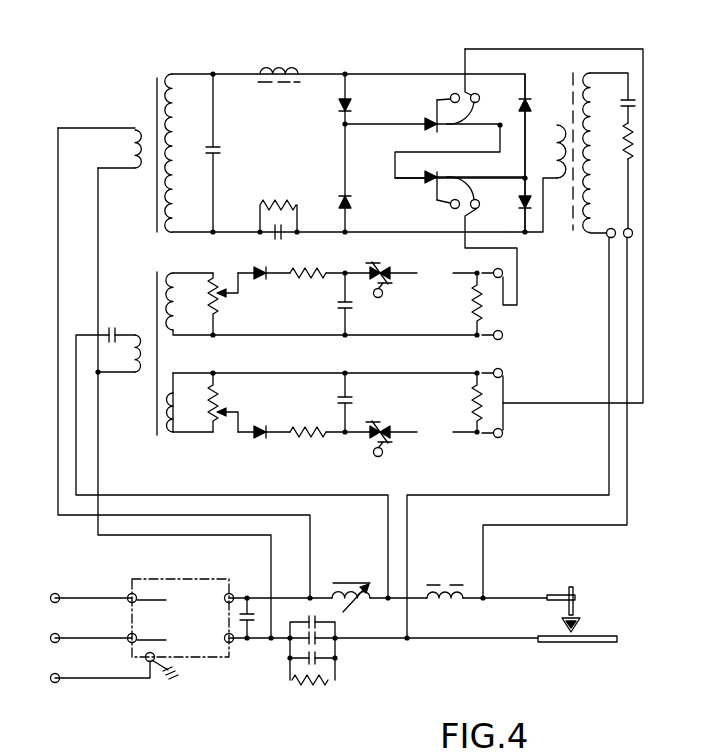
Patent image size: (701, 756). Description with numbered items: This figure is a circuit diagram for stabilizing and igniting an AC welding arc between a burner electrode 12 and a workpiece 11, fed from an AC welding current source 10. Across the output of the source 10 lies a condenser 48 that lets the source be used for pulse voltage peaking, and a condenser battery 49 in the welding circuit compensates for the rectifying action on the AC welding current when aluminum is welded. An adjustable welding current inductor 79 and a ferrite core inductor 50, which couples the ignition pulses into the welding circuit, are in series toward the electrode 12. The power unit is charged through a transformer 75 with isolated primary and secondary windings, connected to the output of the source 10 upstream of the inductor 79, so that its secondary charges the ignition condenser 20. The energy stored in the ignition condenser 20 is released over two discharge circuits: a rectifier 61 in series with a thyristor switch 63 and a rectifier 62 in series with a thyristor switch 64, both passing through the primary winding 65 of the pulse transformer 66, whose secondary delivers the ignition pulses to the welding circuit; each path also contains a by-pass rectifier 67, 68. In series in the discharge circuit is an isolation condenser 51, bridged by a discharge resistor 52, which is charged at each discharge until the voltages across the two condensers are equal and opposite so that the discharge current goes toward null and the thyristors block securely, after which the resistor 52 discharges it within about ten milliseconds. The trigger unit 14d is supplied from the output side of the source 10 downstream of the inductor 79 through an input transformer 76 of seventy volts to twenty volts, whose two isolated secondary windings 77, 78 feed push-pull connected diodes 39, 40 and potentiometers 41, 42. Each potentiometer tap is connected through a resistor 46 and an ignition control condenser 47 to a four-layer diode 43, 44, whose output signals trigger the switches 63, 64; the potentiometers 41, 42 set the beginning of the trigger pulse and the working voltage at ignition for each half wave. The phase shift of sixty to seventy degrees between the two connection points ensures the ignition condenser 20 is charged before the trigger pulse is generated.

The transformer 75 is at (155, 121).
The ignition condenser 20 is at (218, 151).
The discharge resistor 52 is at (282, 206).
The isolation condenser 51 is at (272, 228).
The rectifier 61 is at (350, 106).
The by-pass rectifier 67 is at (349, 206).
The rectifier 62 is at (529, 104).
The by-pass rectifier 68 is at (522, 206).
The switch 63 is at (431, 122).
The switch 64 is at (434, 186).
The primary winding 65 is at (553, 162).
The pulse transformer 66 is at (573, 82).
The input transformer 76 is at (157, 298).
The secondary winding 77 is at (173, 282).
The secondary winding 78 is at (184, 384).
The potentiometer 41 is at (219, 302).
The potentiometer 42 is at (220, 406).
The diode 39 is at (258, 276).
The diode 40 is at (265, 429).
The resistor 46 is at (306, 272).
The ignition control condenser 47 is at (351, 310).
The four-layer diode 43 is at (386, 268).
The four-layer diode 44 is at (386, 428).
The trigger unit 14d is at (50, 392).
The welding current source 10 is at (194, 660).
The condenser 48 is at (240, 628).
The condenser battery 49 is at (334, 661).
The adjustable welding current inductor 79 is at (348, 583).
The inductor 50 is at (445, 588).
The burner electrode 12 is at (578, 600).
The workpiece 11 is at (567, 644).